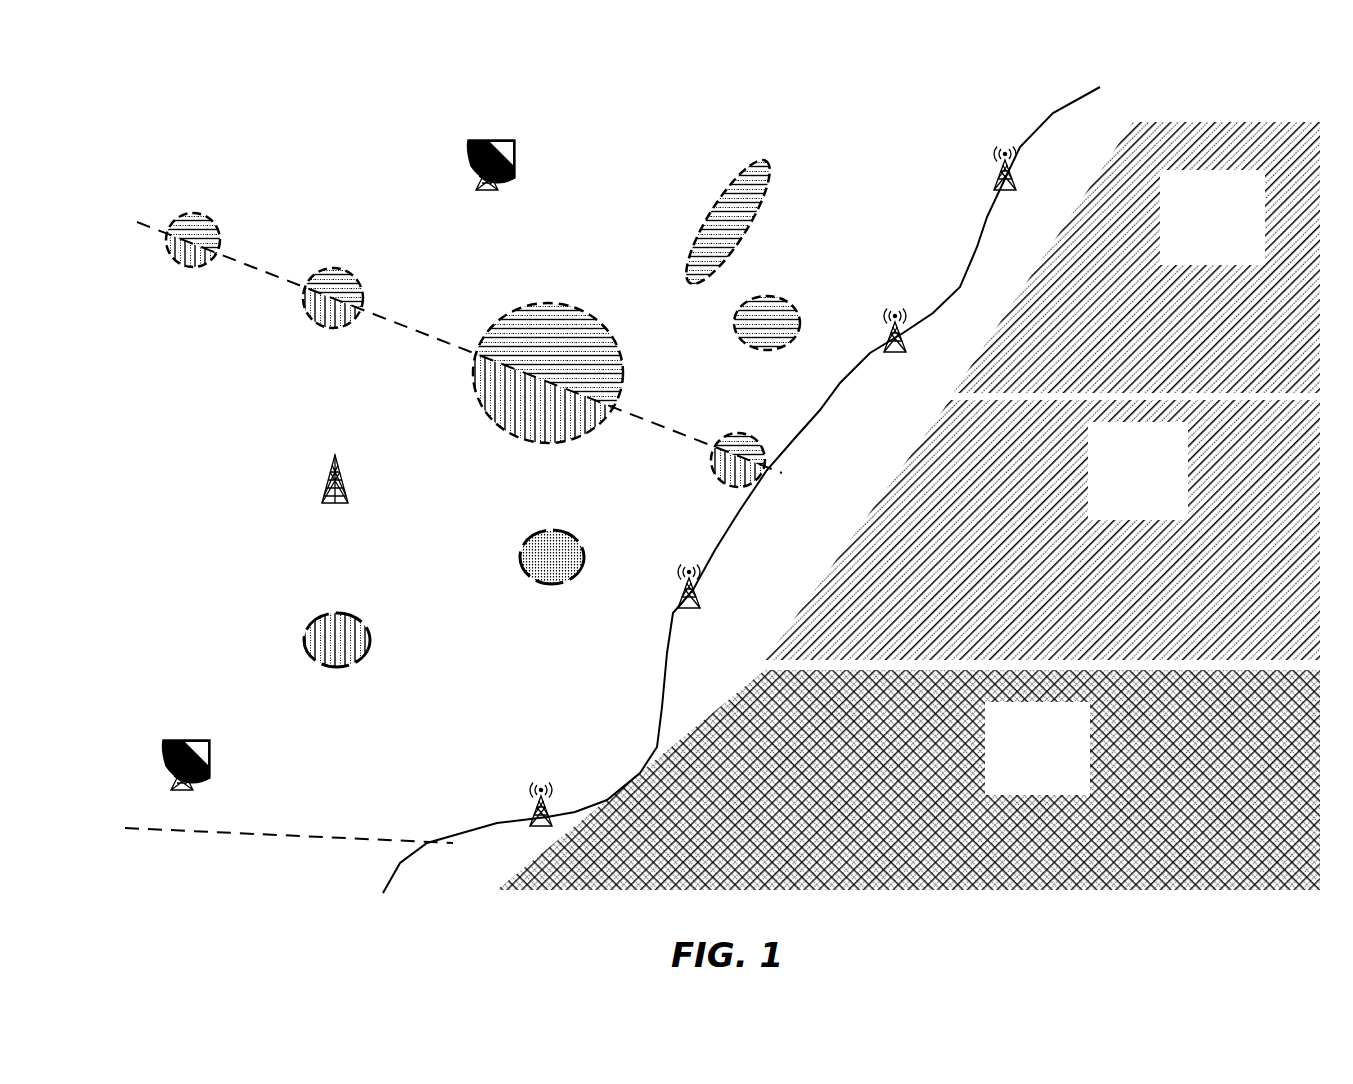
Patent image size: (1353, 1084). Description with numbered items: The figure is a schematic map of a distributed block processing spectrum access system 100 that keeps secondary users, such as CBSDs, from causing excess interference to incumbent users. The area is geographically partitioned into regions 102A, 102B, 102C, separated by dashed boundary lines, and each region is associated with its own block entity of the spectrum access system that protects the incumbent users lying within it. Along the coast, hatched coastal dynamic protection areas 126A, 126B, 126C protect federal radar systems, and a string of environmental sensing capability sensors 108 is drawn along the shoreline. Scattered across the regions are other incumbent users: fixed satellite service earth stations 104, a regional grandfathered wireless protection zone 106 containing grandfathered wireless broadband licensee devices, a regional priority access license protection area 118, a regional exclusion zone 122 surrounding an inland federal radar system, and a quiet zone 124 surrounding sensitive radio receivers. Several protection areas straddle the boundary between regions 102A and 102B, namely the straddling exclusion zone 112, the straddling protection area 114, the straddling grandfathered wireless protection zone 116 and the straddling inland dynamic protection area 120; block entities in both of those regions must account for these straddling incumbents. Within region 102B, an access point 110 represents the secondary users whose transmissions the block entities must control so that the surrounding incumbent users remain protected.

The distributed block processing spectrum access system 100 is at (645, 63).
The region 102A is at (241, 153).
The region 102B is at (154, 387).
The region 102C is at (154, 916).
The fixed satellite service earth station 104 is at (493, 140).
The regional grandfathered wireless protection zone 106 is at (780, 137).
The environmental sensing capability sensor 108 is at (1001, 140).
The access point 110 is at (330, 447).
The straddling exclusion zone 112 is at (208, 210).
The straddling priority access license protection area 114 is at (373, 265).
The straddling grandfathered wireless protection zone 116 is at (582, 290).
The regional priority access license protection area 118 is at (778, 290).
The straddling inland dynamic protection area 120 is at (748, 427).
The regional exclusion zone 122 is at (345, 608).
The quiet zone 124 is at (517, 574).
The coastal dynamic protection area 126A is at (1188, 262).
The coastal dynamic protection area 126B is at (1113, 510).
The coastal dynamic protection area 126C is at (1015, 788).